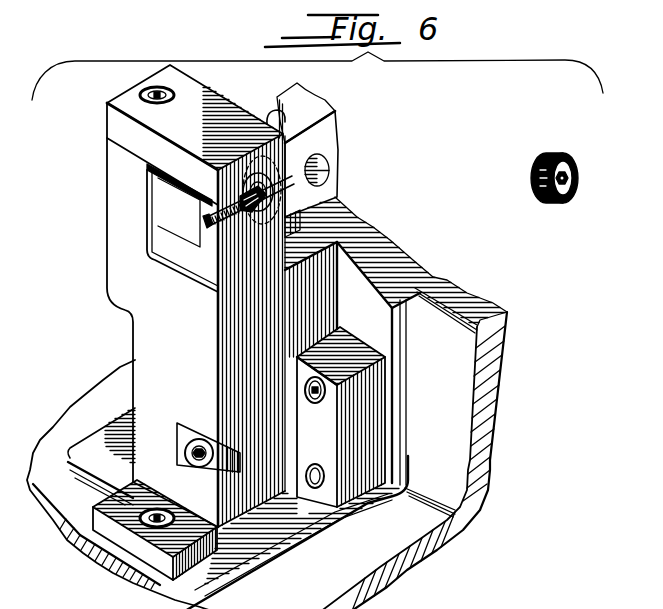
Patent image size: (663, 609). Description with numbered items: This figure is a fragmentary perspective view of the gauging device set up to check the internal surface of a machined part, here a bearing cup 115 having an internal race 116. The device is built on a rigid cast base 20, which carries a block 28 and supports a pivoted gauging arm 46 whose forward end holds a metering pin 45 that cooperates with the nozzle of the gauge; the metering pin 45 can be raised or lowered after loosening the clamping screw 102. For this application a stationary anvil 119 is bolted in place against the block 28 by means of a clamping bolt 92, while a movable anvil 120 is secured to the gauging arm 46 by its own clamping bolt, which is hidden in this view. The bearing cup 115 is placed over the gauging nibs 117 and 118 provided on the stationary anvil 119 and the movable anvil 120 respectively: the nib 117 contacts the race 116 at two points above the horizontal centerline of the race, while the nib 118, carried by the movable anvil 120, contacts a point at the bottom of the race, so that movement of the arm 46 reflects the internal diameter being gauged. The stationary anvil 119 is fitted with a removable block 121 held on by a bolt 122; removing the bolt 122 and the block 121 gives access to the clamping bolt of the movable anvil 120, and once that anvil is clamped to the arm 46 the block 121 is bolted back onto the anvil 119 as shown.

The base 20 is at (494, 415).
The block 28 is at (382, 422).
The metering pin 45 is at (275, 111).
The gauging arm 46 is at (318, 110).
The clamping bolt 92 is at (185, 452).
The clamping screw 102 is at (322, 170).
The bearing cup 115 is at (267, 153).
The race 116 is at (572, 179).
The gauging nib 117 is at (280, 173).
The gauging nib 118 is at (268, 216).
The stationary anvil 119 is at (148, 329).
The movable anvil 120 is at (200, 264).
The removable block 121 is at (116, 124).
The bolt 122 is at (141, 94).